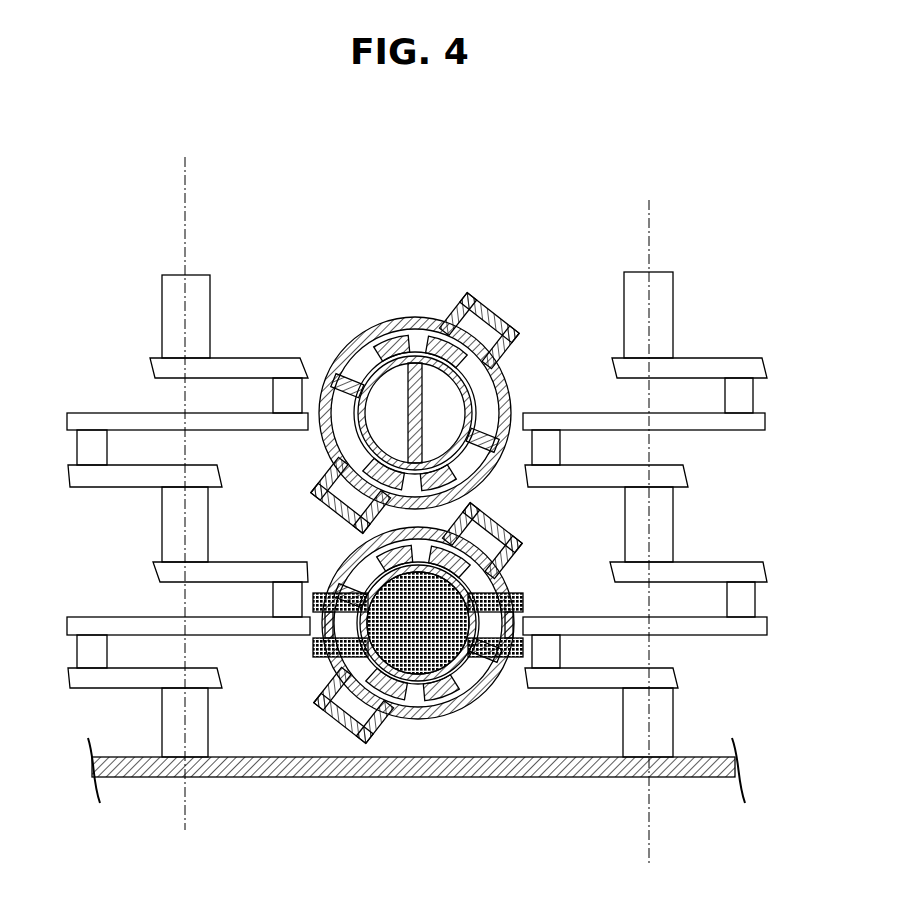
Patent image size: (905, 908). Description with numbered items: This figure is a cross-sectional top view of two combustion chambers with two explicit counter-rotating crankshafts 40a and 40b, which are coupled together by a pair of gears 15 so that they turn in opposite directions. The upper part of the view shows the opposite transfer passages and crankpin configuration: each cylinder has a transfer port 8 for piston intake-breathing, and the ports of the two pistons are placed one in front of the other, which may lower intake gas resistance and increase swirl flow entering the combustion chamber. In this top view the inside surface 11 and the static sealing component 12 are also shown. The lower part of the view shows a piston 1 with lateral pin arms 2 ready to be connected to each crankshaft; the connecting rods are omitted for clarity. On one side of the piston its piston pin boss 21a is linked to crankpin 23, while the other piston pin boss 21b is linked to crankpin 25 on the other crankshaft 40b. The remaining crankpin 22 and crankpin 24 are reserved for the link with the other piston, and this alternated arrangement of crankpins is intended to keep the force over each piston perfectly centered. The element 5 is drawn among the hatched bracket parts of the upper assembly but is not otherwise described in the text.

The piston 1 is at (527, 668).
The pin arms 2 is at (490, 540).
The bracket 5 is at (480, 328).
The transfer port 8 is at (476, 350).
The inside surface 11 is at (360, 380).
The static sealing component 12 is at (335, 372).
The gears 15 is at (540, 778).
The piston pin boss 21a is at (315, 598).
The piston pin boss 21b is at (523, 598).
The crankpin 22 is at (108, 652).
The crankpin 23 is at (560, 652).
The crankpin 24 is at (727, 598).
The crankpin 25 is at (273, 600).
The crankshaft 40a is at (178, 348).
The crankshaft 40b is at (673, 310).